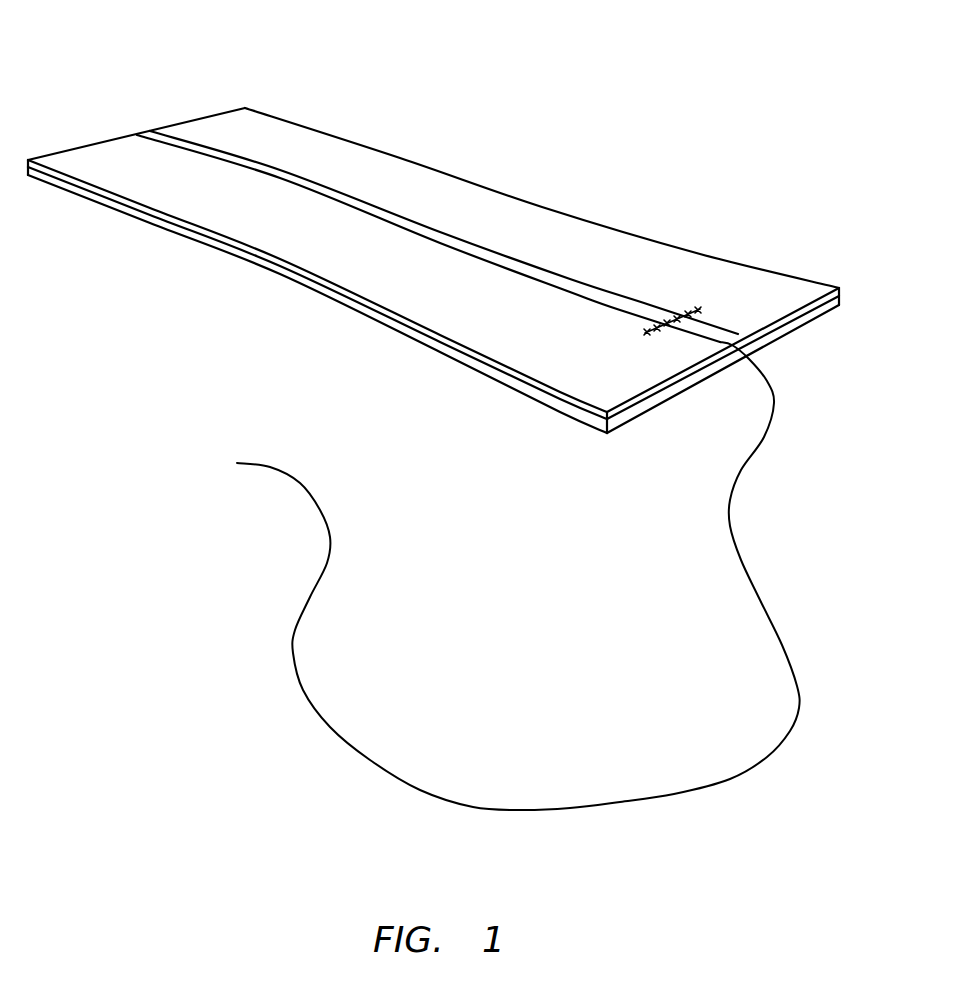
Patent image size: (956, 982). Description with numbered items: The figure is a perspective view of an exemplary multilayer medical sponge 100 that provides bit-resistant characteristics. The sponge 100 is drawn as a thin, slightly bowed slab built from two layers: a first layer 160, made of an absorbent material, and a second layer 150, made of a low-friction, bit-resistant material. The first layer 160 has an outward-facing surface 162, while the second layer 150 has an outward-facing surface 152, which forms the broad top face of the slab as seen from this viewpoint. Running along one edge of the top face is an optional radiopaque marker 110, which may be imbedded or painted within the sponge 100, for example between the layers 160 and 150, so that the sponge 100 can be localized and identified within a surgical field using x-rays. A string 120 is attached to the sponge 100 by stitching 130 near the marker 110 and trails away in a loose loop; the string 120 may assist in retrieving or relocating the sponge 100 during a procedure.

The multilayer medical sponge 100 is at (547, 94).
The radiopaque marker 110 is at (615, 293).
The string 120 is at (332, 537).
The stitching 130 is at (700, 308).
The second layer 150 is at (210, 233).
The outward-facing surface 152 is at (400, 272).
The first layer 160 is at (150, 218).
The outward-facing surface 162 is at (317, 294).